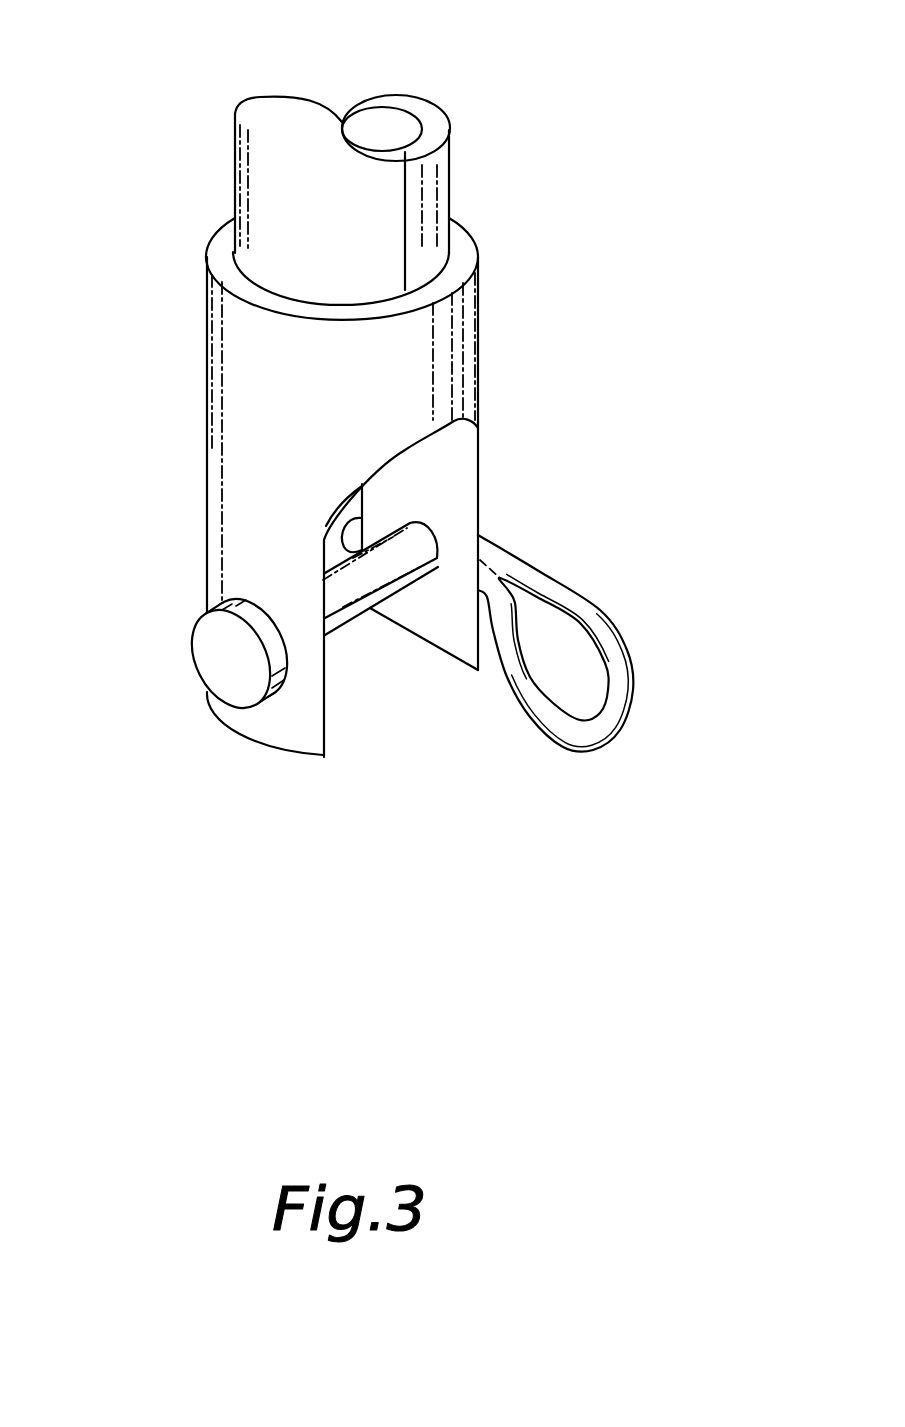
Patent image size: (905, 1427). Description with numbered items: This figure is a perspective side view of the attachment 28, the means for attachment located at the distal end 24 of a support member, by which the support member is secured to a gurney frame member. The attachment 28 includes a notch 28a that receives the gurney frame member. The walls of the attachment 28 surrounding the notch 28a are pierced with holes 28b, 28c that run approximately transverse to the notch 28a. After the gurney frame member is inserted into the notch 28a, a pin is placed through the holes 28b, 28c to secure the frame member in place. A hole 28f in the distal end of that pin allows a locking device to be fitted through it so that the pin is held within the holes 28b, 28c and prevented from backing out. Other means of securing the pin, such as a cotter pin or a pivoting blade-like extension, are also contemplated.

The distal end 24 is at (233, 146).
The attachment 28 is at (147, 192).
The notch 28a is at (372, 705).
The hole 28b is at (442, 553).
The hole 28c is at (197, 671).
The hole 28f is at (597, 610).